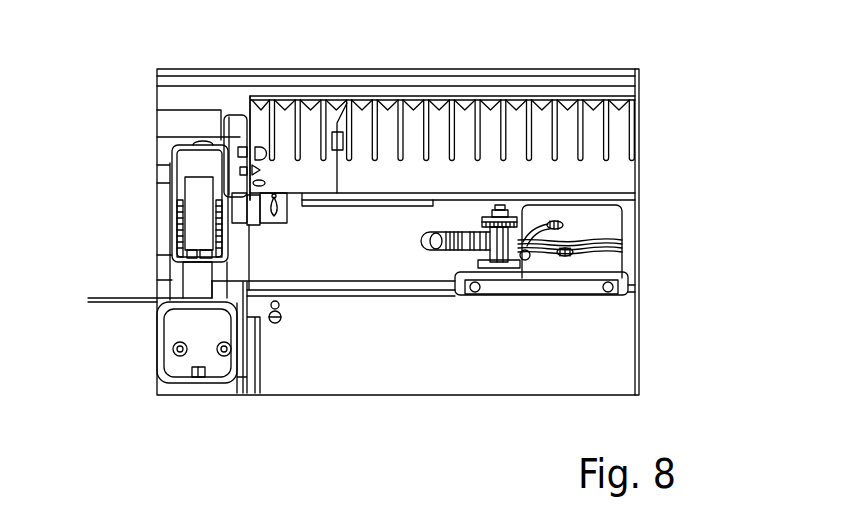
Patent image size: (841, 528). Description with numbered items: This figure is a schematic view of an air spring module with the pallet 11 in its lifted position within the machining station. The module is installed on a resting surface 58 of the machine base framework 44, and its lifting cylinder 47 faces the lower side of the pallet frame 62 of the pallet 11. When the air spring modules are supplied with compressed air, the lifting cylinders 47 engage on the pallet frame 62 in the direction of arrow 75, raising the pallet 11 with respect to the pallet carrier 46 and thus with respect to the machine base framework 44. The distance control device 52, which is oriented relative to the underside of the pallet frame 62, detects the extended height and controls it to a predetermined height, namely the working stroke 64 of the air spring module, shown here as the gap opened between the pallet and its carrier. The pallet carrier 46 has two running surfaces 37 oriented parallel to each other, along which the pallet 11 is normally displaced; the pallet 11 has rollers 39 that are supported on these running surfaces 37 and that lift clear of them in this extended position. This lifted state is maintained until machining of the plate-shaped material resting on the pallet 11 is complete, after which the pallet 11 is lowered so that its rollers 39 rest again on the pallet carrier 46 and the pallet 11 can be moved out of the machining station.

The pallet 11 is at (652, 120).
The arrow 75 is at (580, 194).
The pallet frame 62 is at (630, 199).
The lifting cylinder 47 is at (628, 241).
The distance control device 52 is at (480, 207).
The resting surface 58 is at (372, 272).
The rollers 39 is at (193, 291).
The running surfaces 37 is at (176, 298).
The working stroke 64 is at (90, 273).
The machine base framework 44 is at (138, 370).
The pallet carrier 46 is at (163, 381).